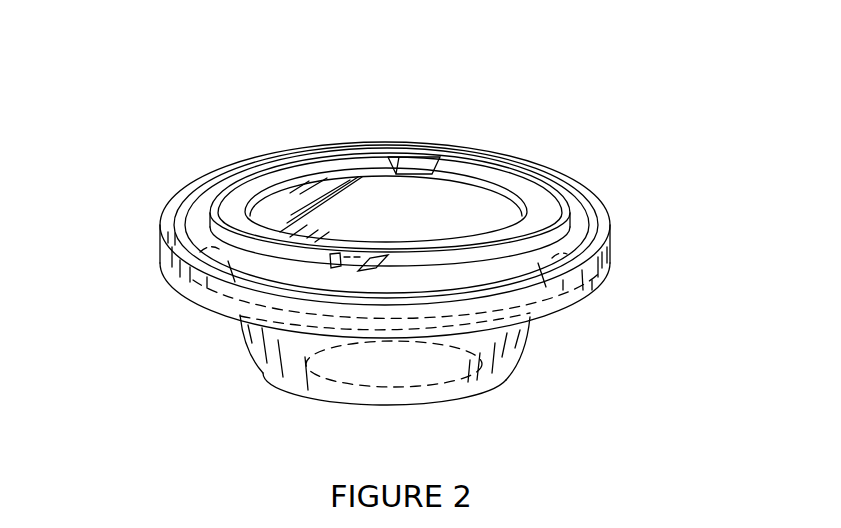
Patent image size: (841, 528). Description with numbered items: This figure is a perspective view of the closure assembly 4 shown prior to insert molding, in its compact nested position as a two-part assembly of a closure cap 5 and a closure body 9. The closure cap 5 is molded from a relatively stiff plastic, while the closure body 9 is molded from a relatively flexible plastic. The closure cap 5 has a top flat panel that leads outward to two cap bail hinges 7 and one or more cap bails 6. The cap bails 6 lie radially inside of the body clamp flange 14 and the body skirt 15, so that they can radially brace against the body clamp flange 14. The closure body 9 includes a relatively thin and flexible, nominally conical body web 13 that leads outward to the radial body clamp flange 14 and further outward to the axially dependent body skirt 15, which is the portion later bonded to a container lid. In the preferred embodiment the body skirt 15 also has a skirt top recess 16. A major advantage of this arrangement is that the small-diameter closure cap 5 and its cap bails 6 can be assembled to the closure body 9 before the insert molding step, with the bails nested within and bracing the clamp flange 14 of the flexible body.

The closure assembly 4 is at (520, 133).
The closure cap 5 is at (383, 197).
The cap bail 6 is at (236, 193).
The cap bail hinge 7 is at (424, 163).
The closure body 9 is at (215, 363).
The conical body web 13 is at (531, 344).
The body clamp flange 14 is at (580, 220).
The body skirt 15 is at (577, 281).
The skirt top recess 16 is at (175, 218).